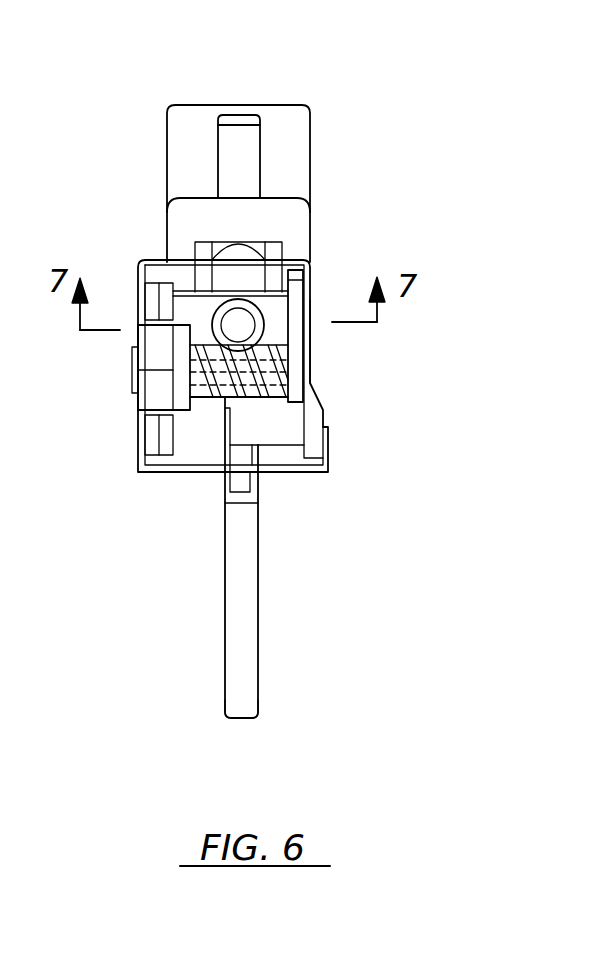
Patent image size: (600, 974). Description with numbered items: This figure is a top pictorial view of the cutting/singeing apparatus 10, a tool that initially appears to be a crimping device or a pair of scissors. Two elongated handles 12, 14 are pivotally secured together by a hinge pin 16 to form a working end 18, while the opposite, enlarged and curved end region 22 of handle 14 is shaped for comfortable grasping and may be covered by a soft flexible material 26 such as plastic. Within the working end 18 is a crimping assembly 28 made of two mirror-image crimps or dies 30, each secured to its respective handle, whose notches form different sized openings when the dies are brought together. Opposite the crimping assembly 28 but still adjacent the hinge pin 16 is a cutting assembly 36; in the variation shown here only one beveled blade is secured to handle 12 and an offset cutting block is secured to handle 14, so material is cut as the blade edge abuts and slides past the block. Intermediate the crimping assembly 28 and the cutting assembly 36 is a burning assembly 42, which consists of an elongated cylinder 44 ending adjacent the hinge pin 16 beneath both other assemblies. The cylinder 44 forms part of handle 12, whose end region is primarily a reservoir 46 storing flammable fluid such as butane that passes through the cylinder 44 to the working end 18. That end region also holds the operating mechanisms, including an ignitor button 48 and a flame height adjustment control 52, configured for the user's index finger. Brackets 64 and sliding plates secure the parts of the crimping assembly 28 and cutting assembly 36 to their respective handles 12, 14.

The cutting/singeing apparatus 10 is at (378, 183).
The elongated handle 12 is at (167, 143).
The elongated handle 14 is at (225, 643).
The hinge pin 16 is at (311, 365).
The working end 18 is at (125, 425).
The end region 22 is at (226, 709).
The soft flexible material 26 is at (237, 505).
The crimping assembly 28 is at (138, 398).
The crimp or die 30 is at (132, 347).
The cutting assembly 36 is at (308, 320).
The burning assembly 42 is at (212, 312).
The elongated cylinder 44 is at (253, 303).
The reservoir 46 is at (310, 145).
The ignitor button 48 is at (216, 134).
The flame height adjustment control 52 is at (0, 557).
The brackets 64 is at (152, 260).